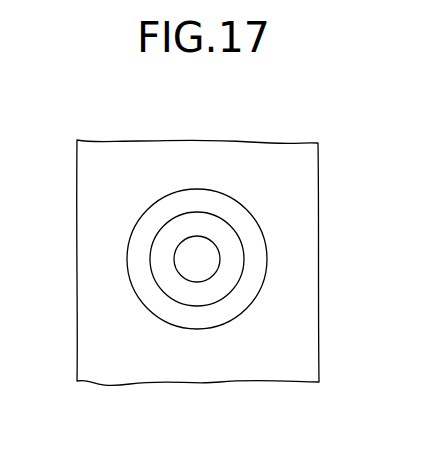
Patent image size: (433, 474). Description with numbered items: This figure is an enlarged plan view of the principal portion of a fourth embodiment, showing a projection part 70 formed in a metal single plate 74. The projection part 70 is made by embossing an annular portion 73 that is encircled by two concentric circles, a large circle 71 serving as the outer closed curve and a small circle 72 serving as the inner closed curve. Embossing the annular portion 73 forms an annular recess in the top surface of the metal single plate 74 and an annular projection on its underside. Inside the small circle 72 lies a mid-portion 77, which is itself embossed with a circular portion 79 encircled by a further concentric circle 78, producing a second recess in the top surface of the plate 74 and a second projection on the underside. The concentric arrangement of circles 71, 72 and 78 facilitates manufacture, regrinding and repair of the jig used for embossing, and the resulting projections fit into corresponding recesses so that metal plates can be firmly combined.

The projection part 70 is at (213, 167).
The large concentric circle 71 is at (253, 218).
The small concentric circle 72 is at (245, 254).
The annular portion 73 is at (204, 313).
The metal single plate 74 is at (307, 343).
The mid-portion 77 is at (203, 330).
The concentric circle 78 is at (139, 342).
The circular portion 79 is at (186, 257).